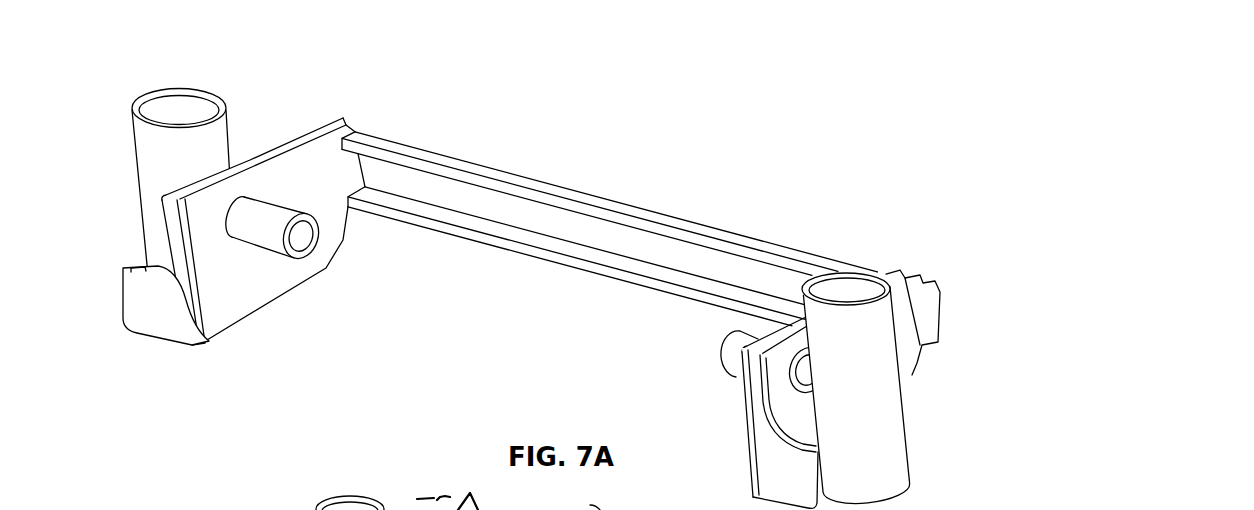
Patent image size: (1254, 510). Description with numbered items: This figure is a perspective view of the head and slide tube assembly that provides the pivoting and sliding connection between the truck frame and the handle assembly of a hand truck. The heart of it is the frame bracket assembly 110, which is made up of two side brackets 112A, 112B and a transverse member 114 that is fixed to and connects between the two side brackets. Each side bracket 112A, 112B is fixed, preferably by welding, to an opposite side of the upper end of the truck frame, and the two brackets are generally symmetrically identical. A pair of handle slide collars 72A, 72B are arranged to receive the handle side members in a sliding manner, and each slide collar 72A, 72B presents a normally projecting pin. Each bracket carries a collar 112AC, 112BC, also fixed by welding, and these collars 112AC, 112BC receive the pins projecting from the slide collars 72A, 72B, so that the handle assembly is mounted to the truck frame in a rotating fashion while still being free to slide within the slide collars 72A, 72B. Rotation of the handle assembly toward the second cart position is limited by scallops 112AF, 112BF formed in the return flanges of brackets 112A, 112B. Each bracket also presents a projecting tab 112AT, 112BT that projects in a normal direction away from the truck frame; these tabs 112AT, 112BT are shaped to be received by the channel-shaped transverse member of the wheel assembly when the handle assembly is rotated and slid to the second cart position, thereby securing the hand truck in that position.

The frame bracket assembly 110 is at (602, 265).
The transverse member 114 is at (603, 212).
The handle slide collar 72A is at (222, 103).
The handle slide collar 72B is at (1007, 438).
The side bracket 112A is at (446, 288).
The collar 112AC is at (271, 212).
The projecting tab 112AT is at (357, 130).
The scallop 112AF is at (201, 334).
The side bracket 112B is at (835, 377).
The collar 112BC is at (593, 342).
The projecting tab 112BT is at (912, 374).
The scallop 112BF is at (631, 398).